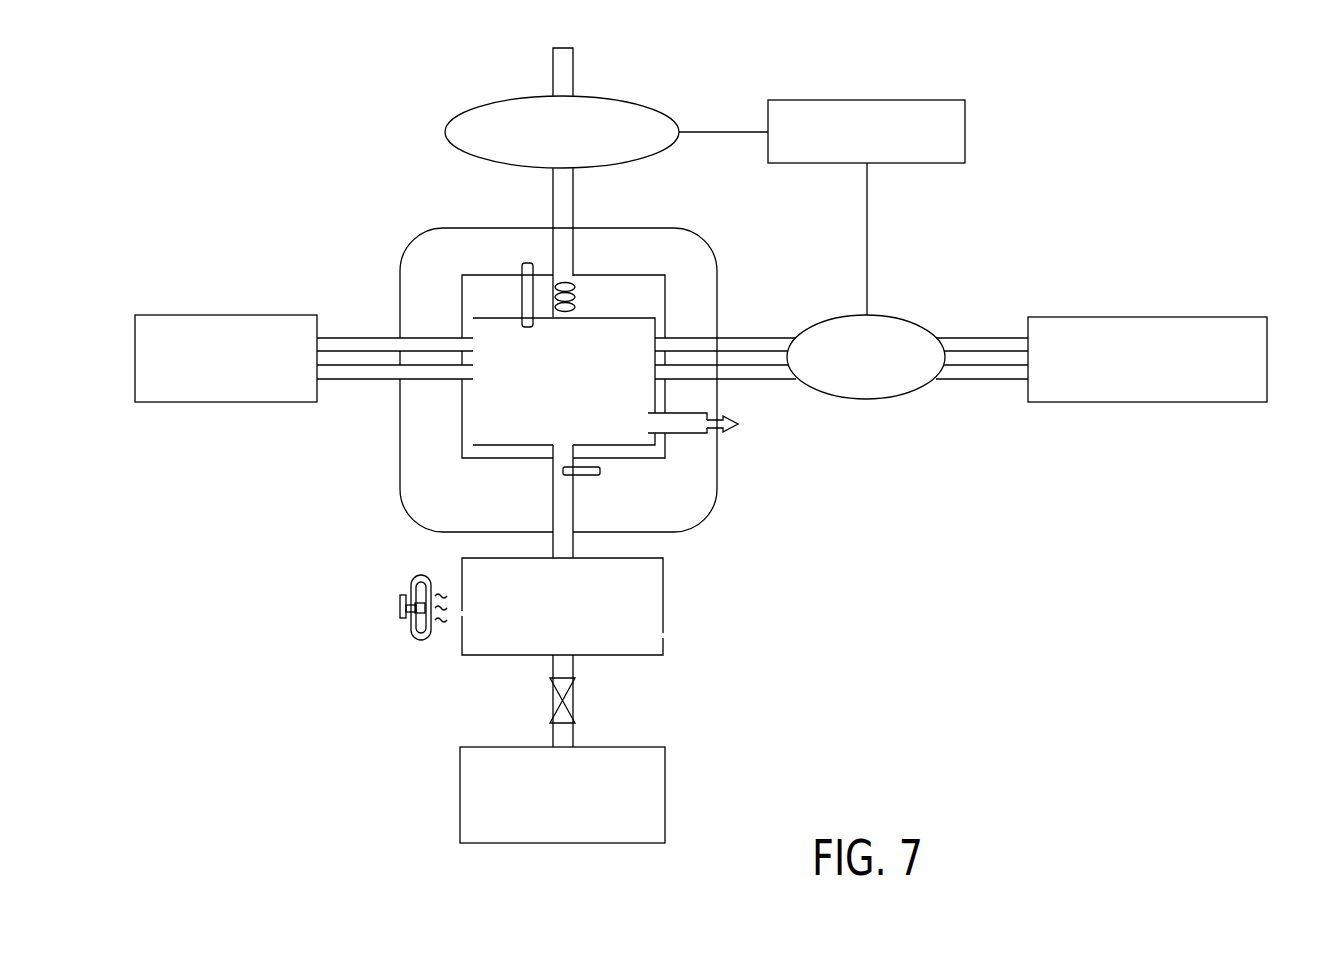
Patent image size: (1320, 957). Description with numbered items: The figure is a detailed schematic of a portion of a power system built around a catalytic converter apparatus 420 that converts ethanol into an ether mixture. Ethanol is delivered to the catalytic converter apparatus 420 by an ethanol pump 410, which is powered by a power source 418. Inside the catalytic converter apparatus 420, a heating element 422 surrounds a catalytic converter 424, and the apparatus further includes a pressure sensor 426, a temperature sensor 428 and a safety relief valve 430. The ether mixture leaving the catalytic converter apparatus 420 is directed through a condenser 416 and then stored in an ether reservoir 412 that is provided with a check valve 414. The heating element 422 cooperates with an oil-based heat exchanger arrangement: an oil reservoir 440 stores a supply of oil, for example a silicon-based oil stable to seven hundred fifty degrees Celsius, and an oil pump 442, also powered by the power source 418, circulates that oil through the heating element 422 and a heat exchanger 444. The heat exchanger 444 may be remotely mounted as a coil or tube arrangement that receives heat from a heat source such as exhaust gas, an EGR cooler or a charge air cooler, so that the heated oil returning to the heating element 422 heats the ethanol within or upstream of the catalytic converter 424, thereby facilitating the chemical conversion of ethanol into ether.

The ethanol pump 410 is at (505, 97).
The ether reservoir 412 is at (665, 793).
The check valve 414 is at (557, 697).
The condenser 416 is at (663, 607).
The power source 418 is at (870, 100).
The catalytic converter apparatus 420 is at (421, 240).
The heating element 422 is at (462, 297).
The catalytic converter 424 is at (470, 413).
The pressure sensor 426 is at (585, 477).
The temperature sensor 428 is at (522, 296).
The safety relief valve 430 is at (692, 435).
The oil reservoir 440 is at (1188, 316).
The oil pump 442 is at (913, 323).
The heat exchanger 444 is at (226, 315).